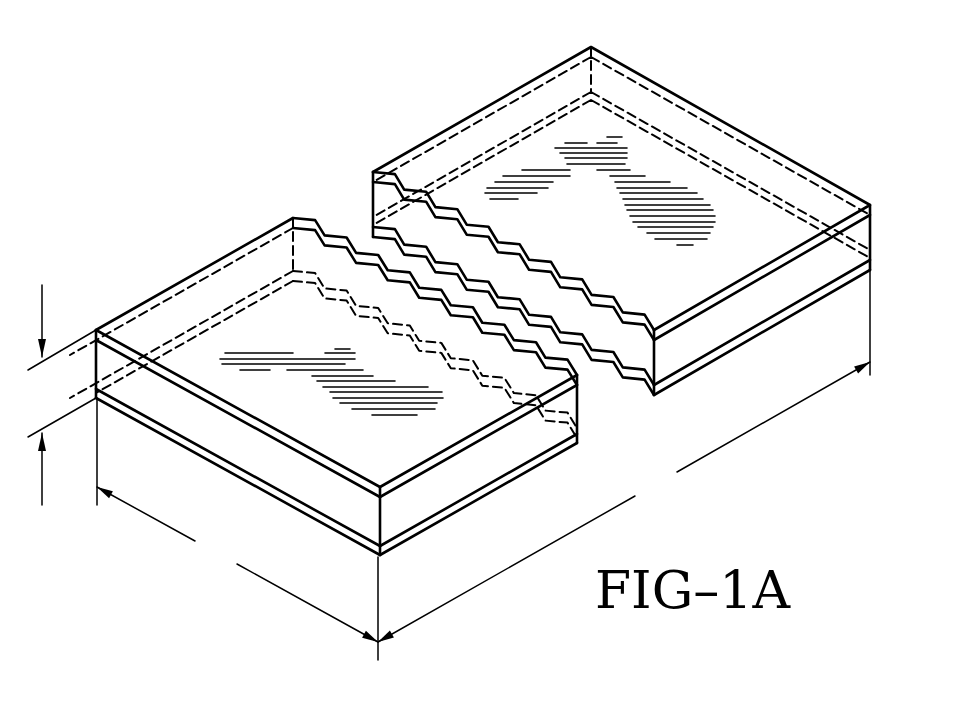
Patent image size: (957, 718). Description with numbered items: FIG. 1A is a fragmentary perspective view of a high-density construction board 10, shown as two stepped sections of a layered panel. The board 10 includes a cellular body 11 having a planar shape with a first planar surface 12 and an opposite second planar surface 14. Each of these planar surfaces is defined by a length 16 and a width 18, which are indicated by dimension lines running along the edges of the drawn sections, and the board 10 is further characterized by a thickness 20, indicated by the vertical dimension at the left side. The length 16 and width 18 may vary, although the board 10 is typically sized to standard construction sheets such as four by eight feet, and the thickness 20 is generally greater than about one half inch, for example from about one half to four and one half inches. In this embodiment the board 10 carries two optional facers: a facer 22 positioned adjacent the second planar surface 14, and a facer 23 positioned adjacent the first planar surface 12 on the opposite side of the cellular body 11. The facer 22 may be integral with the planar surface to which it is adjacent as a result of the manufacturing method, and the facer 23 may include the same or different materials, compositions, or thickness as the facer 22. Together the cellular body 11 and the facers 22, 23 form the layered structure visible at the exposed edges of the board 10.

The board 10 is at (475, 108).
The cellular body 11 is at (462, 473).
The first planar surface 12 is at (210, 400).
The second planar surface 14 is at (418, 523).
The length 16 is at (624, 456).
The width 18 is at (237, 529).
The thickness 20 is at (60, 395).
The facer 22 is at (233, 475).
The facer 23 is at (267, 268).